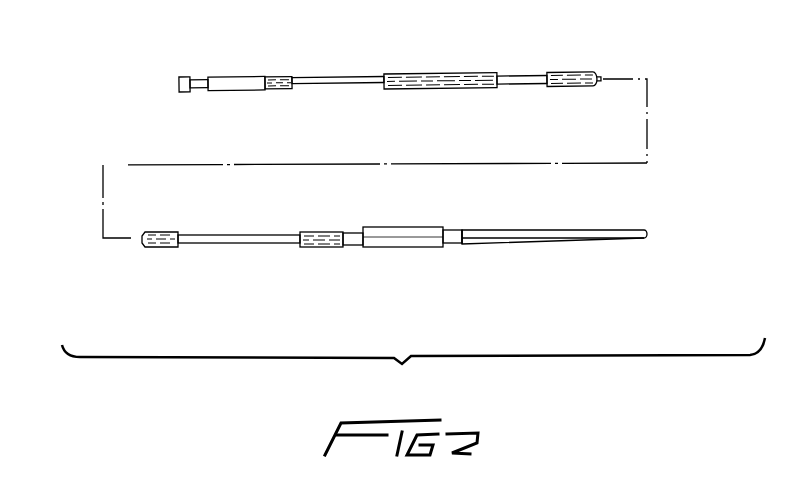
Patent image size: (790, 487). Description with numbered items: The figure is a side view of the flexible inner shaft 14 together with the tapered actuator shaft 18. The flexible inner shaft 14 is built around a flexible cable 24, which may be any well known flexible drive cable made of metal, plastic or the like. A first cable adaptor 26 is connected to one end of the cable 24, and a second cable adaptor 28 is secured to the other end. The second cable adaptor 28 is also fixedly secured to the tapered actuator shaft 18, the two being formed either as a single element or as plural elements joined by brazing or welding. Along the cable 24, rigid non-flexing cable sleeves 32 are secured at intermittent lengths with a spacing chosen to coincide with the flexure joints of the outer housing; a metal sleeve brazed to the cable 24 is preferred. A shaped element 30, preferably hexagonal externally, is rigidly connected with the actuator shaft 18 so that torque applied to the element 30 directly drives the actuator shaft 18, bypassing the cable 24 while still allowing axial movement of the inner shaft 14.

The flexible inner shaft 14 is at (389, 76).
The tapered actuator shaft 18 is at (502, 230).
The flexible cable 24 is at (334, 87).
The first cable adaptor 26 is at (236, 78).
The second cable adaptor 28 is at (353, 229).
The shaped element 30 is at (408, 237).
The rigid non-flexing cable sleeves 32 is at (447, 73).